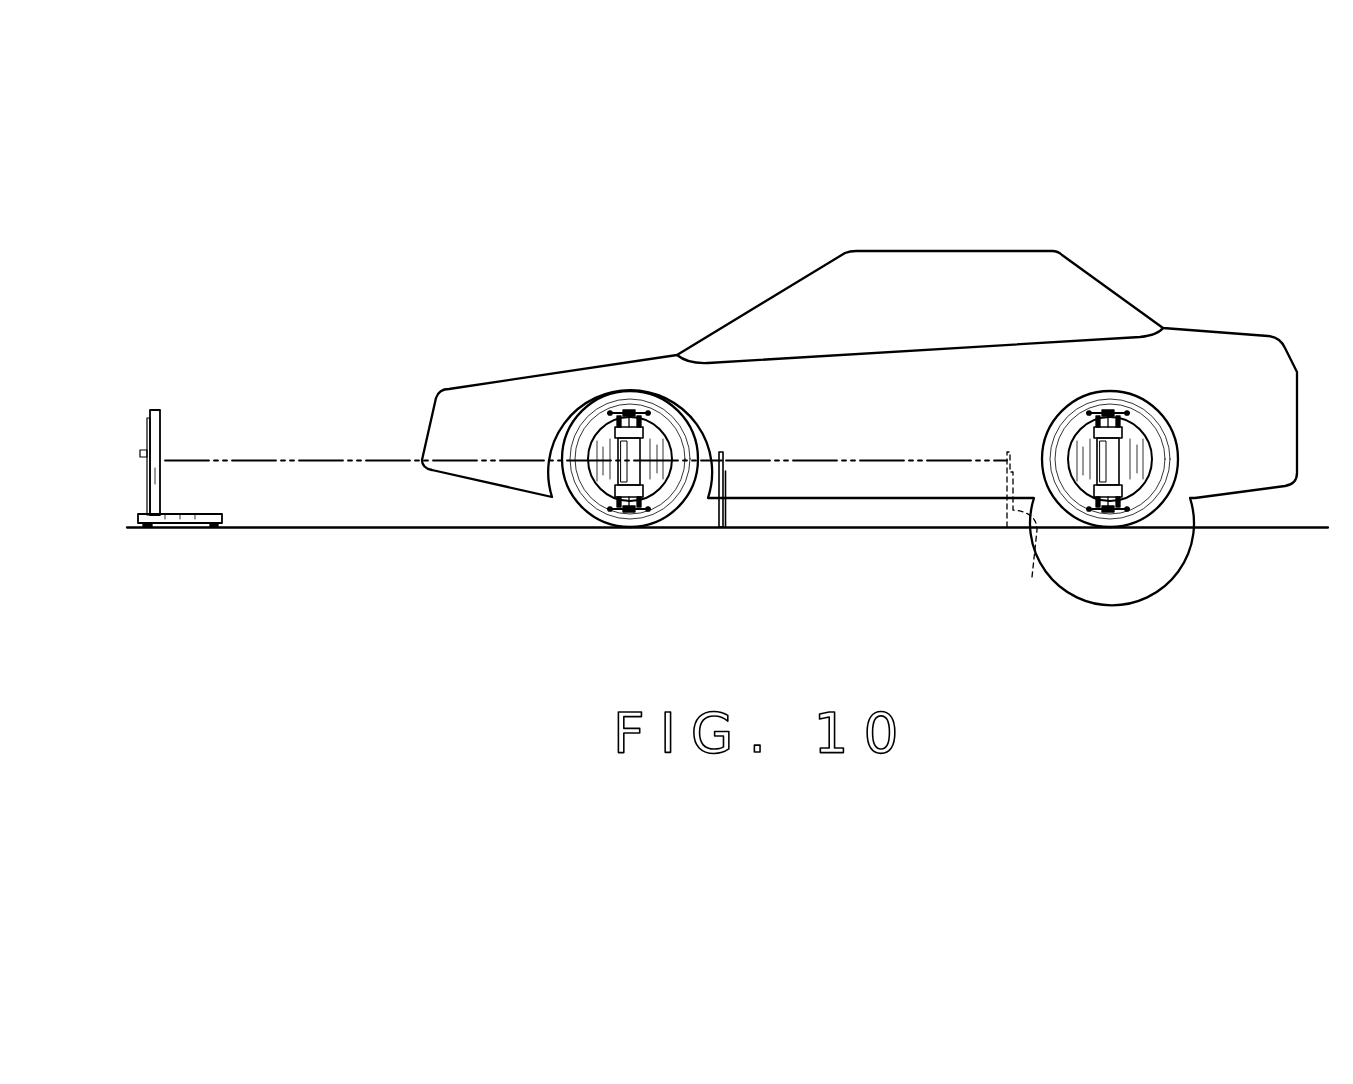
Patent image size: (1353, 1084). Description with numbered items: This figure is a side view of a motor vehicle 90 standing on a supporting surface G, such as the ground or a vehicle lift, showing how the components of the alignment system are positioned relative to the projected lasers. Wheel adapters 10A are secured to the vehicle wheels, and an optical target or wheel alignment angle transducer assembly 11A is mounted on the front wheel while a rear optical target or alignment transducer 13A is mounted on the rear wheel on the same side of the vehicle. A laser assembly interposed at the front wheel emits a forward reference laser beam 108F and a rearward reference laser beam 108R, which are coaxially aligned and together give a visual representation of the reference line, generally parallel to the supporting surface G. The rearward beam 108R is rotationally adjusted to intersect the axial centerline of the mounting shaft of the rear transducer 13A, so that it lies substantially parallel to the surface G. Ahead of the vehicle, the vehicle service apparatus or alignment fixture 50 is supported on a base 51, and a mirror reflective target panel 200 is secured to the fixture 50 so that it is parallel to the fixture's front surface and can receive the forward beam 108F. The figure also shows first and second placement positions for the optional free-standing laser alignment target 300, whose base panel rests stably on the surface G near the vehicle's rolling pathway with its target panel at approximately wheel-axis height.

The vehicle 90 is at (1128, 279).
The wheel adapter 10A is at (653, 427).
The optical target or wheel alignment angle transducer assembly 11A is at (655, 483).
The rear optical target or alignment transducer 13A is at (1142, 470).
The vehicle service apparatus or alignment fixture 50 is at (149, 462).
The mirror reflective target panel 200 is at (155, 480).
The base 51 is at (157, 524).
The forward reference laser beam 108F is at (283, 459).
The rearward reference laser beam 108R is at (827, 461).
The laser alignment target 300 is at (737, 512).
The supporting surface G is at (337, 529).